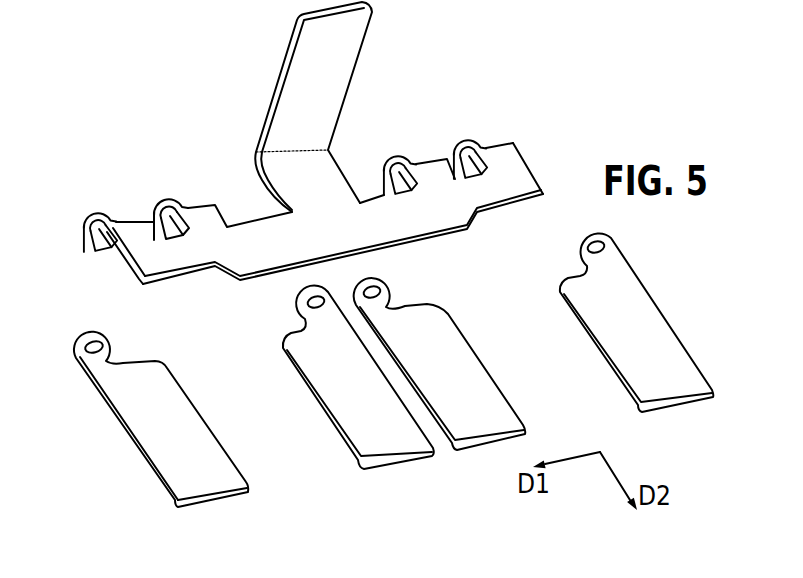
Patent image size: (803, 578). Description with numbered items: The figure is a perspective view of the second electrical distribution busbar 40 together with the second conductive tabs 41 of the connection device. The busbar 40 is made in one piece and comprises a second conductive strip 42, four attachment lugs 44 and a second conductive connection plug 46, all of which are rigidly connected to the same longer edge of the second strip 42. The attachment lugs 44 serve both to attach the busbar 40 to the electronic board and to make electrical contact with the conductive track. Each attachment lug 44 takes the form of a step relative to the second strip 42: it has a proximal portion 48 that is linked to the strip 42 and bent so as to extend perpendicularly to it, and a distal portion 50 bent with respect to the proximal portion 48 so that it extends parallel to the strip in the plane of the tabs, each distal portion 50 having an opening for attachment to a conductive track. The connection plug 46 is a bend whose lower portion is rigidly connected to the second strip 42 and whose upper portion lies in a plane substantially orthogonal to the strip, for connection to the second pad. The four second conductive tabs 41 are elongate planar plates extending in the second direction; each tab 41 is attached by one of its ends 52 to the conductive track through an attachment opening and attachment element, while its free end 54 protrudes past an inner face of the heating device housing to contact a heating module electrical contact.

The second electrical distribution busbar 40 is at (106, 276).
The second conductive tab 41 is at (162, 437).
The second conductive strip 42 is at (513, 163).
The attachment lug 44 is at (413, 155).
The second conductive connection plug 46 is at (345, 38).
The proximal portion 48 is at (90, 250).
The distal portion 50 is at (93, 214).
The end 52 is at (103, 355).
The free end 54 is at (223, 473).